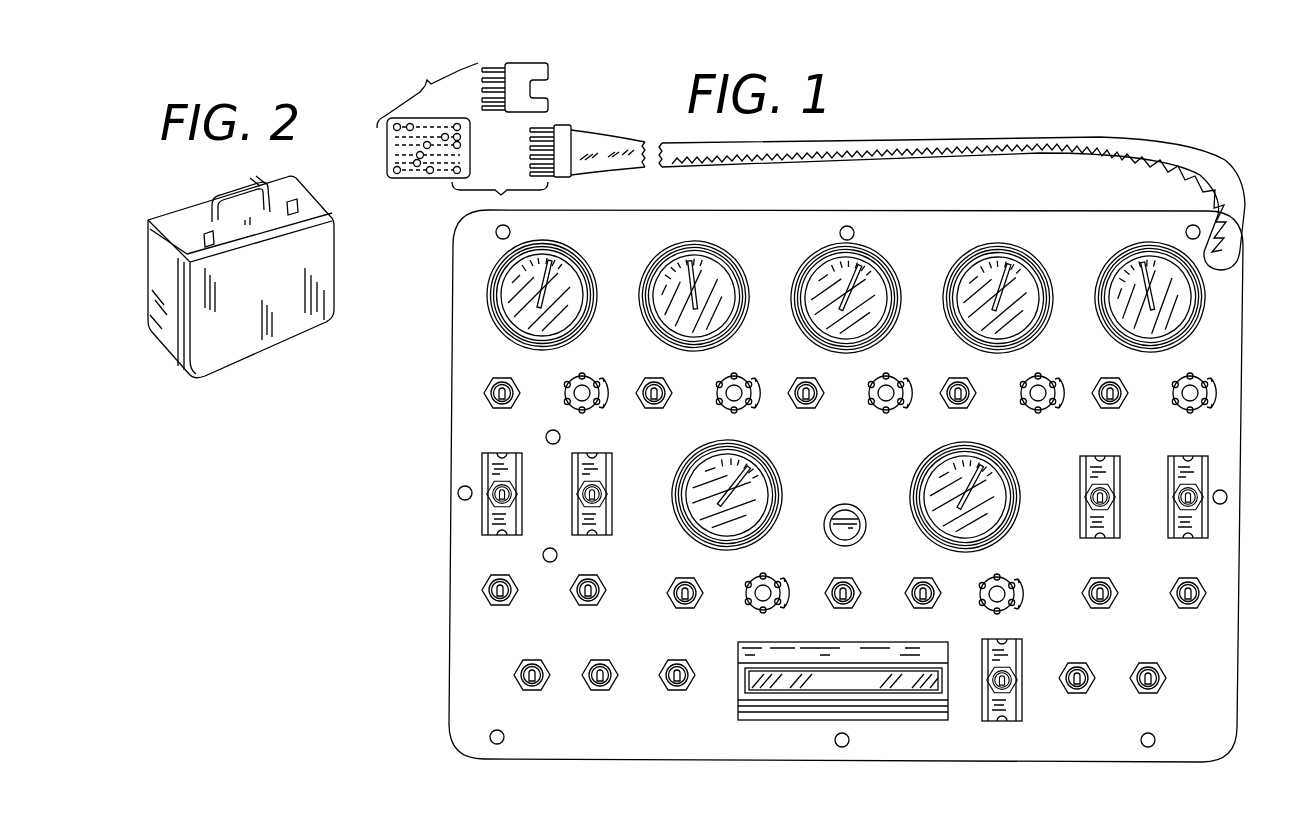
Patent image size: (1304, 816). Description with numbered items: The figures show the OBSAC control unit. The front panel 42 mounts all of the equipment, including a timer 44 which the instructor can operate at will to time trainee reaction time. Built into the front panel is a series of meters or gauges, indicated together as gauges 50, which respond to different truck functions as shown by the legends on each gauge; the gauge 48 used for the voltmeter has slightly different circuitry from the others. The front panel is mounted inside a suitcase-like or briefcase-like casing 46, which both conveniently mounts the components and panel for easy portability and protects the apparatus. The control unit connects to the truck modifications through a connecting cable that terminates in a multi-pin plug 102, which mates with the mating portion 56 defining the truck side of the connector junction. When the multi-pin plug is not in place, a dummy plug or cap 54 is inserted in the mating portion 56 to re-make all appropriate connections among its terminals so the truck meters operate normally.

In FIG. 1, the front panel 42 is at (876, 504).
In FIG. 1, the timer 44 is at (903, 690).
In FIG. 2, the casing 46 is at (313, 255).
In FIG. 1, the voltmeter gauge 48 is at (882, 253).
In FIG. 1, the gauges 50 is at (660, 255).
In FIG. 1, the plug or cap 54 is at (543, 87).
In FIG. 1, the mating portion 56 is at (387, 155).
In FIG. 1, the multi-pin plug 102 is at (565, 125).